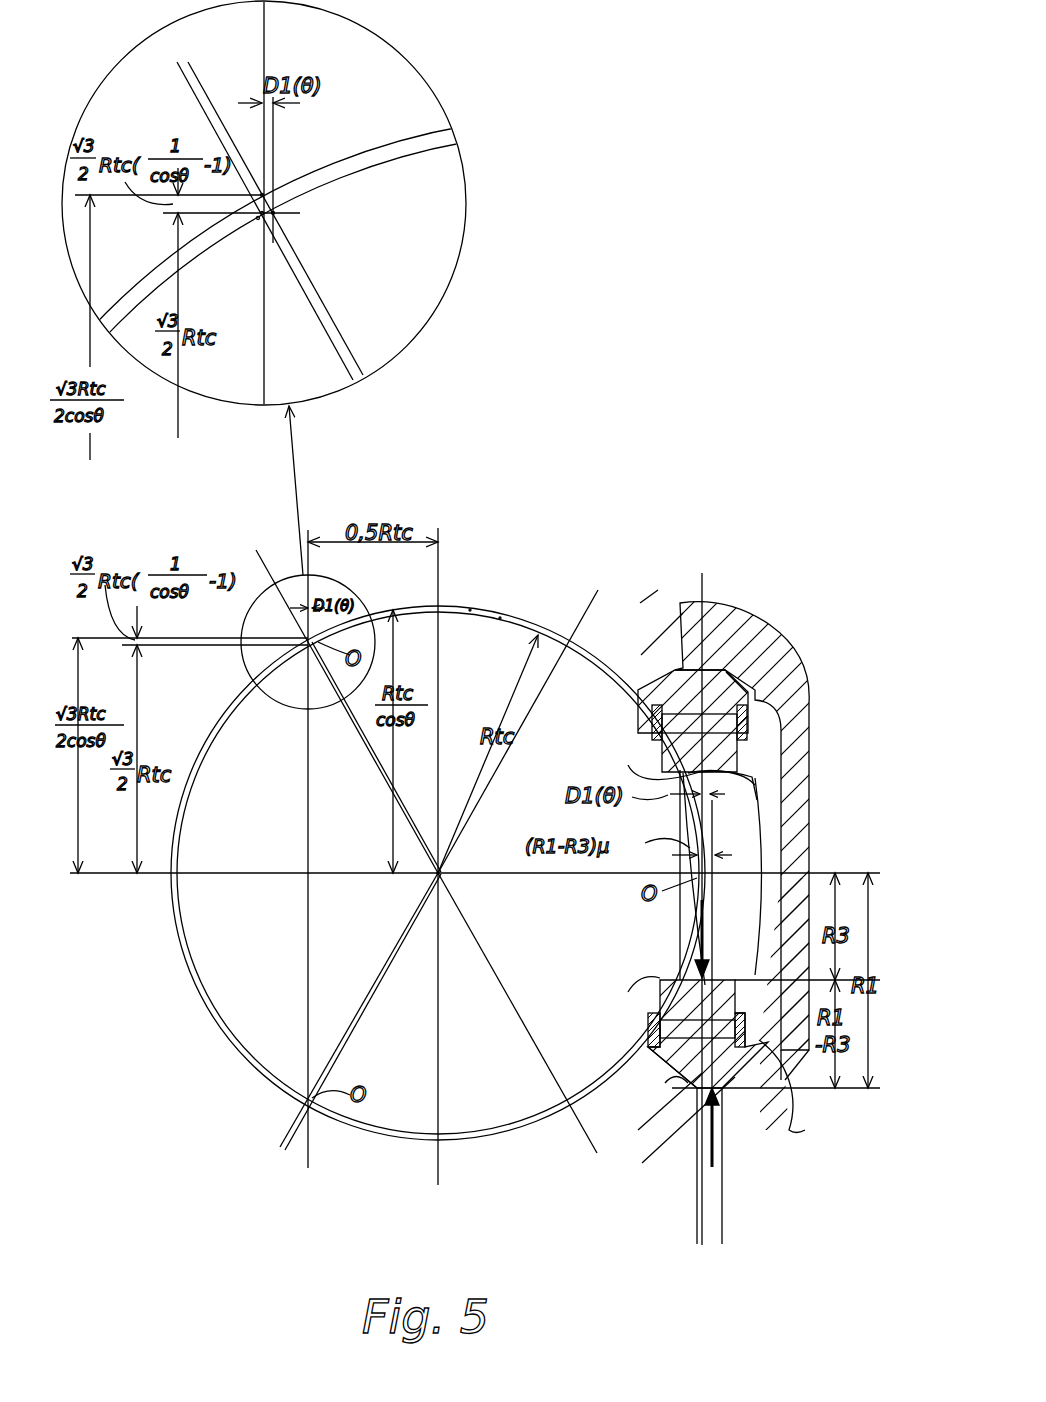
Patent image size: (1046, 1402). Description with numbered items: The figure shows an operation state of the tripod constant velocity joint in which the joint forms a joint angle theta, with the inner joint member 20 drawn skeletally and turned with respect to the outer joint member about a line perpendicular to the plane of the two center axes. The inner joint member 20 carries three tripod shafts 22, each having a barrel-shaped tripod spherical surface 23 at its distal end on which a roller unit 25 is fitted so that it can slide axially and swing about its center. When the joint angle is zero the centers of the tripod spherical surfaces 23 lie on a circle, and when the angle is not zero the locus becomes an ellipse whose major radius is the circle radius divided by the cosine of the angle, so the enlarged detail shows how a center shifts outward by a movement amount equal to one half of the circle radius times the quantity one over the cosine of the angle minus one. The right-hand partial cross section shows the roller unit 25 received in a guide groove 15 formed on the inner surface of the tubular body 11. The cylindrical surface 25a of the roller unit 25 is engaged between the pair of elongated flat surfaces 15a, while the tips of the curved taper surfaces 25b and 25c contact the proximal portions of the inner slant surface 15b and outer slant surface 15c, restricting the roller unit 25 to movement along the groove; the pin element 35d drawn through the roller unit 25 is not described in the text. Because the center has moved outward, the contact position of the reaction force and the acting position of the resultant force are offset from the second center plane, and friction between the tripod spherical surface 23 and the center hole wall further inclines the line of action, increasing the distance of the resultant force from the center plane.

The tubular body 11 is at (735, 620).
The guide groove 15 is at (783, 748).
The elongated flat surface 15a is at (665, 1105).
The inner slant surface 15b is at (655, 1052).
The outer slant surface 15c is at (799, 1094).
The inner joint member 20 is at (330, 315).
The tripod shaft 22 is at (765, 832).
The tripod spherical surface 23 is at (752, 774).
The roller unit 25 is at (760, 722).
The outer periphery cylindrical surface 25a is at (680, 603).
The taper surface 25b is at (650, 715).
The taper surface 25c is at (796, 655).
The pin 35d is at (660, 978).